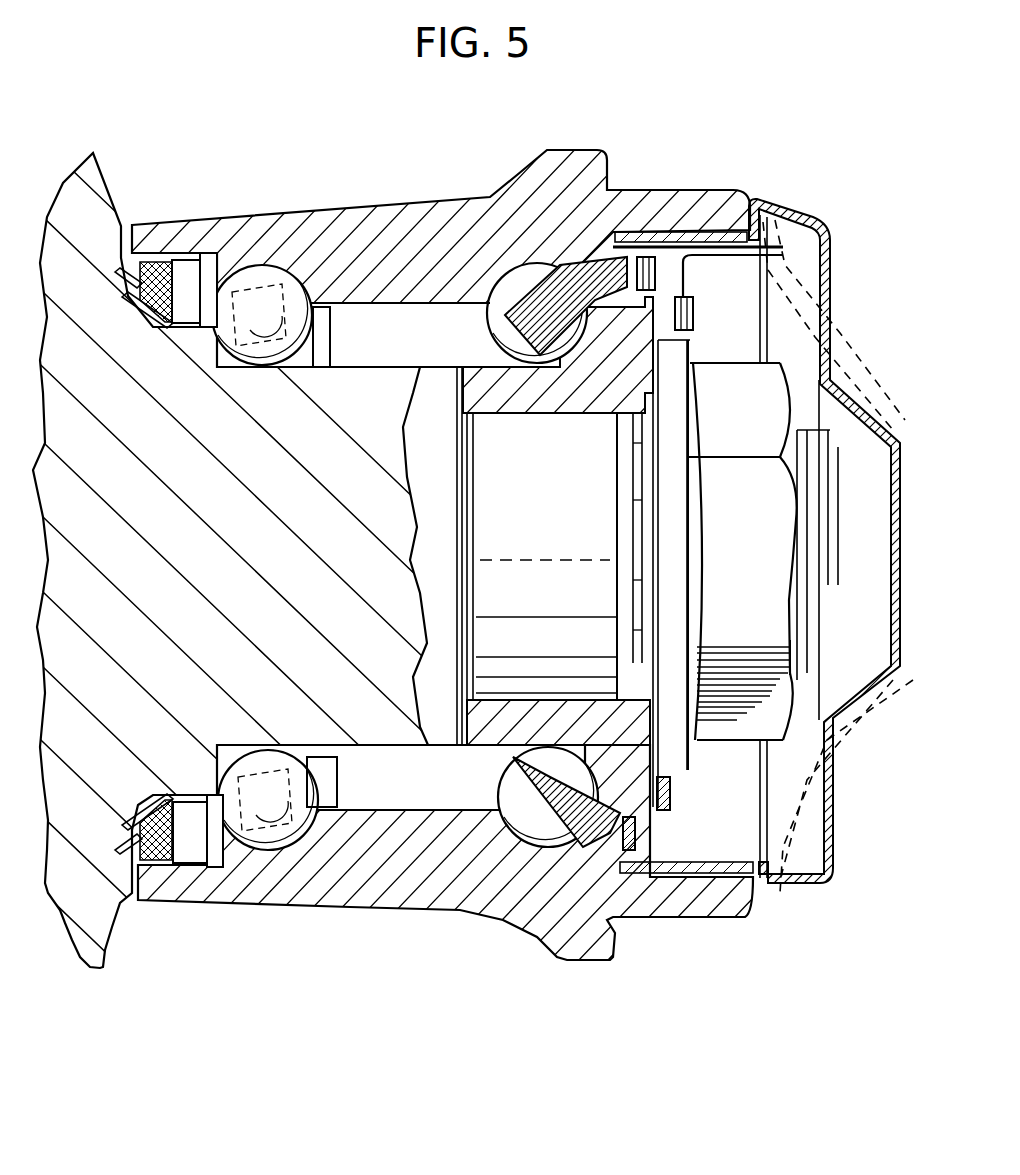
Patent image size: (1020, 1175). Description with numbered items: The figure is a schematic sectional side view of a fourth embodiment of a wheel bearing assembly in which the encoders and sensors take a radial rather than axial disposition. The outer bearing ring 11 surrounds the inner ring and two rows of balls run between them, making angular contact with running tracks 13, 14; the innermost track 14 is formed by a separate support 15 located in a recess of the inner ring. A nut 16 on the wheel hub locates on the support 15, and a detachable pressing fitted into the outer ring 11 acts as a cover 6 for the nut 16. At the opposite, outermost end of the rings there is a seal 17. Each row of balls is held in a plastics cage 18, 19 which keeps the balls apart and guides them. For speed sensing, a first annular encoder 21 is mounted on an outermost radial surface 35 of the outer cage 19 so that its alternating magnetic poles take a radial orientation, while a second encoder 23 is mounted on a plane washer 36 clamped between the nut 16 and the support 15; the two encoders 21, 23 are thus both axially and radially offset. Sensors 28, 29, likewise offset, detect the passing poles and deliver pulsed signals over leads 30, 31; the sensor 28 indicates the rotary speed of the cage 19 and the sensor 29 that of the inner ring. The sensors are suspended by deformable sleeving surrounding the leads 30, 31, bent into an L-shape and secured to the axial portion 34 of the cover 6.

The cover 6 is at (831, 539).
The outer bearing ring 11 is at (364, 214).
The running track 13 is at (264, 266).
The running track 14 is at (237, 745).
The support 15 is at (483, 748).
The nut 16 is at (767, 390).
The seal 17 is at (163, 263).
The cage 18 is at (298, 370).
The cage 19 is at (562, 318).
The first encoder 21 is at (632, 232).
The second encoder 23 is at (673, 797).
The sensor 28 is at (670, 257).
The sensor 29 is at (697, 315).
The lead 30 is at (838, 523).
The lead 31 is at (787, 242).
The axial portion 34 is at (680, 874).
The outermost radial surface 35 is at (637, 833).
The plane washer 36 is at (583, 385).